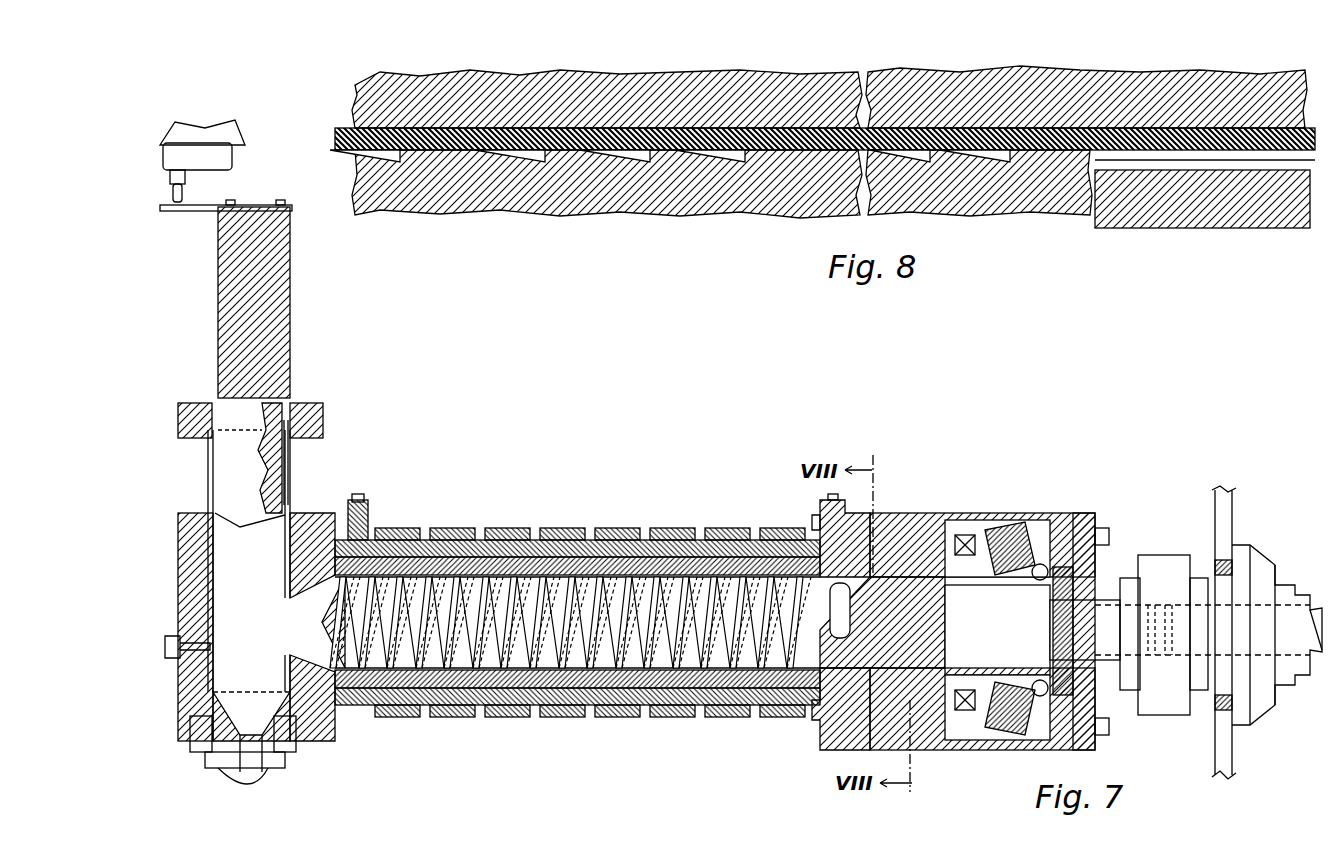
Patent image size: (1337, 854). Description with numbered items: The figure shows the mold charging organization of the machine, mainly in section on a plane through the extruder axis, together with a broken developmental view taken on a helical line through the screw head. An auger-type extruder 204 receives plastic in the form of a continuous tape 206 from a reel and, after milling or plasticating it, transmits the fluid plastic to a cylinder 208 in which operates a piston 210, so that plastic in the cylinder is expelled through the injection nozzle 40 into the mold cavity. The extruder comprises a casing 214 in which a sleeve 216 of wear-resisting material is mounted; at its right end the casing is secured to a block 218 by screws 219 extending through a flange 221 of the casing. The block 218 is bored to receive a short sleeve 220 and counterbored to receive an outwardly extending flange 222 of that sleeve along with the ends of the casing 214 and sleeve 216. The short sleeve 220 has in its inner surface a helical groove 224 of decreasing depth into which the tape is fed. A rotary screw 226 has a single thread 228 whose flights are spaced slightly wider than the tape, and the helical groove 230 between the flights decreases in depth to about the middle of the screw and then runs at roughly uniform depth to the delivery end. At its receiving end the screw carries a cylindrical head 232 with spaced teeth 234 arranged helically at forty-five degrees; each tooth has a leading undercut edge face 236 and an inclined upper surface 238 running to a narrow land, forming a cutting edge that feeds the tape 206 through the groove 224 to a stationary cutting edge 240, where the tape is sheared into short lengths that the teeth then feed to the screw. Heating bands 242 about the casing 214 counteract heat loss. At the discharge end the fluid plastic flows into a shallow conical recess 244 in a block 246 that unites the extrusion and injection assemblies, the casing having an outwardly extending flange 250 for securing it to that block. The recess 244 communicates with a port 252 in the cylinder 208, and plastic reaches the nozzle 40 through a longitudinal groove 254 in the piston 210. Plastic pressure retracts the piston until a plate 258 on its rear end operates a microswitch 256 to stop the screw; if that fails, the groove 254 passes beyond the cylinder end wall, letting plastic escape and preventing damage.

In FIG. 7, the injection nozzle 40 is at (255, 783).
In FIG. 7, the extruder 204 is at (575, 520).
In FIG. 8, the tape 206 is at (1305, 162).
In FIG. 7, the cylinder 208 is at (290, 508).
In FIG. 7, the piston 210 is at (292, 332).
In FIG. 8, the casing 214 is at (829, 97).
In FIG. 7, the casing 214 is at (625, 555).
In FIG. 7, the sleeve 216 is at (693, 560).
In FIG. 7, the block 218 is at (920, 520).
In FIG. 7, the screws 219 is at (805, 528).
In FIG. 8, the short sleeve 220 is at (1288, 92).
In FIG. 7, the short sleeve 220 is at (900, 580).
In FIG. 7, the flange 221 is at (808, 740).
In FIG. 7, the flange 222 is at (850, 740).
In FIG. 8, the helical groove 224 is at (1165, 135).
In FIG. 7, the helical groove 224 is at (895, 655).
In FIG. 7, the rotary screw 226 is at (493, 565).
In FIG. 7, the thread 228 is at (578, 670).
In FIG. 7, the helical groove 230 is at (598, 668).
In FIG. 8, the cylindrical head 232 is at (800, 215).
In FIG. 7, the cylindrical head 232 is at (905, 605).
In FIG. 8, the teeth 234 is at (932, 162).
In FIG. 7, the teeth 234 is at (900, 630).
In FIG. 8, the edge face 236 is at (862, 200).
In FIG. 8, the upper surface 238 is at (1020, 162).
In FIG. 8, the cutting edge 240 is at (395, 150).
In FIG. 7, the heating bands 242 is at (588, 535).
In FIG. 7, the conical recess 244 is at (308, 597).
In FIG. 7, the block 246 is at (345, 742).
In FIG. 7, the flange 250 is at (372, 712).
In FIG. 7, the port 252 is at (283, 622).
In FIG. 7, the longitudinal groove 254 is at (282, 520).
In FIG. 7, the microswitch 256 is at (187, 202).
In FIG. 7, the plate 258 is at (205, 211).